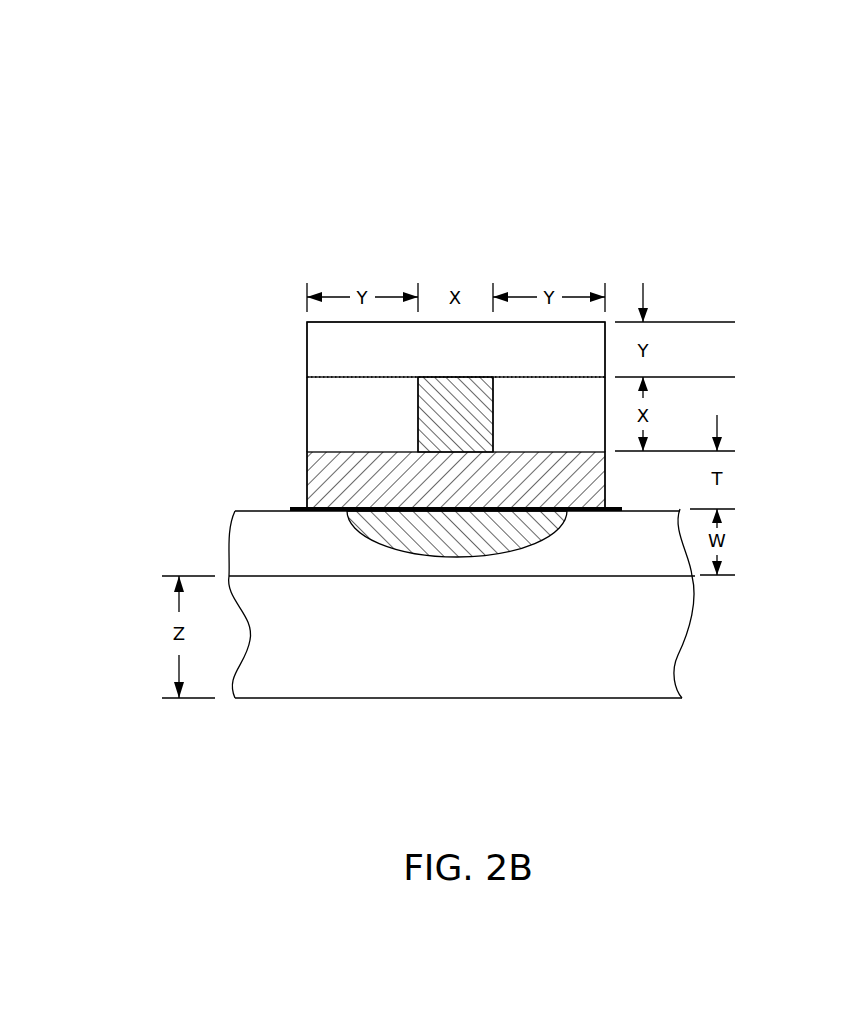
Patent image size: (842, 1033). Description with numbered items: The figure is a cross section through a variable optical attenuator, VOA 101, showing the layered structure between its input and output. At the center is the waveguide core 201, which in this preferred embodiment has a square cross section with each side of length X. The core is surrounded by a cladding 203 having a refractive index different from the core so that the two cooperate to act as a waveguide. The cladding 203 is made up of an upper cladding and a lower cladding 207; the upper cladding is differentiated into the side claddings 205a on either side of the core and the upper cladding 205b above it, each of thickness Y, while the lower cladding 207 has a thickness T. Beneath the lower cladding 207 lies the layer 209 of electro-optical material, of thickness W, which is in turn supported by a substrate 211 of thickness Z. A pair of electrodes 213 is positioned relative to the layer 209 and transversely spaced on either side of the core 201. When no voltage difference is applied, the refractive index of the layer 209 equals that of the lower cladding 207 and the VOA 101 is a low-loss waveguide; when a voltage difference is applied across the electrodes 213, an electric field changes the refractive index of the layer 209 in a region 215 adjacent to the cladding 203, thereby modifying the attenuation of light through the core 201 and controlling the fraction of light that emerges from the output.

The VOA 101 is at (446, 70).
The waveguide core 201 is at (455, 414).
The cladding 203 is at (262, 390).
The side claddings 205a is at (456, 414).
The upper cladding 205b is at (456, 349).
The lower cladding 207 is at (456, 480).
The layer of electro-optical material 209 is at (462, 542).
The substrate 211 is at (461, 637).
The pair of electrodes 213 is at (295, 507).
The region 215 is at (457, 534).